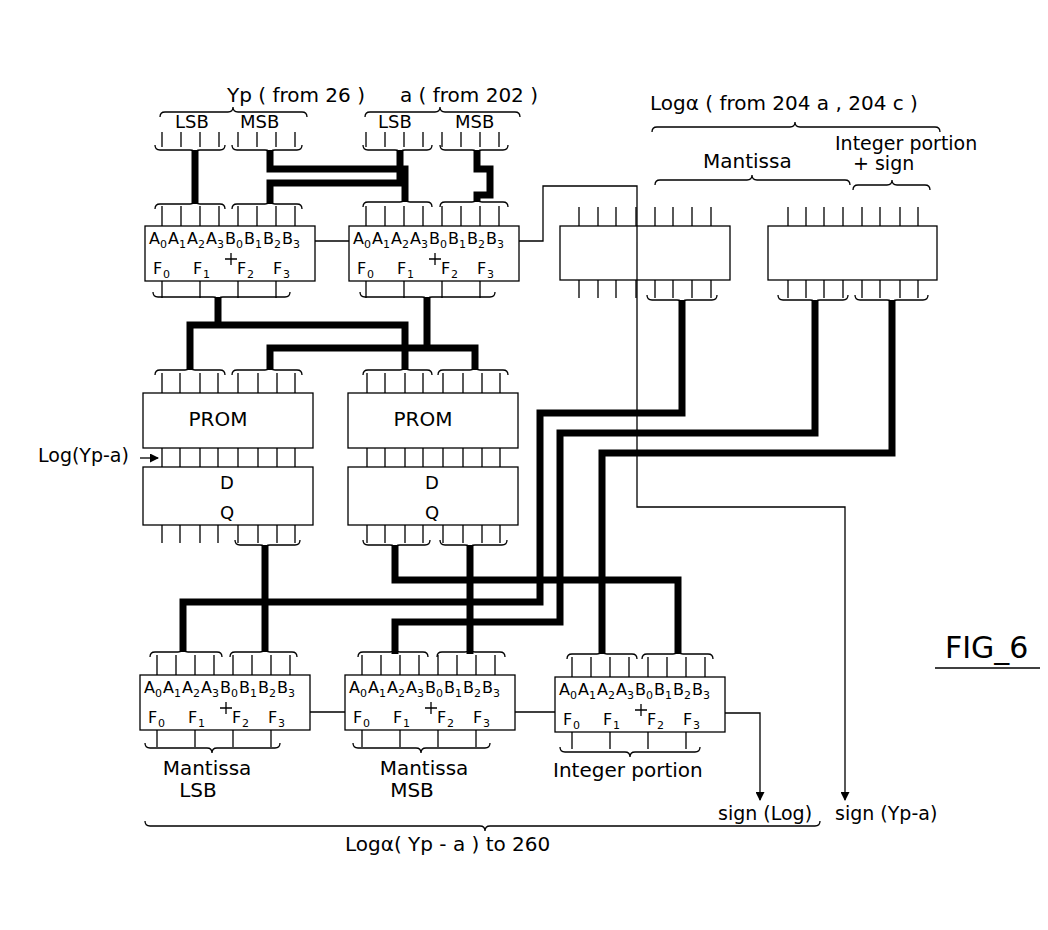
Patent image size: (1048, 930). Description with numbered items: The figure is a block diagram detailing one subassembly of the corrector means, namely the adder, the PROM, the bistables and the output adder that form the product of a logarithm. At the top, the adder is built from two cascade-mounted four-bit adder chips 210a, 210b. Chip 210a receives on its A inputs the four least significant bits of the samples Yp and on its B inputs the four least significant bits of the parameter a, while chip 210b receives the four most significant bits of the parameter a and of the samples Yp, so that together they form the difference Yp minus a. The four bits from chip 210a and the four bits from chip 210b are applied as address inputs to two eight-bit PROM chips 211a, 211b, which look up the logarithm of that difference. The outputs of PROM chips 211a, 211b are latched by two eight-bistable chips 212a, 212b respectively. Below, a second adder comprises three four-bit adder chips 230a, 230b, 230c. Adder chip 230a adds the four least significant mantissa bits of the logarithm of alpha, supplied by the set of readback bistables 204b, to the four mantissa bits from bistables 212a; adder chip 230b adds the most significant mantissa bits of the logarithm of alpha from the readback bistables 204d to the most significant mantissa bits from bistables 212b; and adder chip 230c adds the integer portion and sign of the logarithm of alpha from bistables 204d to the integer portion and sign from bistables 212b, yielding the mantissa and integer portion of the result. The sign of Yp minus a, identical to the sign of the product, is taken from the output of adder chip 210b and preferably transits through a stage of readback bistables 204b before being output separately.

The 4-bit adder chip 210a is at (135, 243).
The 4-bit adder chip 210b is at (343, 263).
The 8-bit PROM chip 211a is at (140, 415).
The 8-bit PROM chip 211b is at (527, 405).
The 8-bistable chip 212a is at (140, 516).
The 8-bistable chip 212b is at (337, 528).
The set of readback bistables 204b is at (733, 238).
The set of readback bistables 204d is at (945, 253).
The 4-bit adder chip 230a is at (135, 690).
The 4-bit adder chip 230b is at (335, 680).
The 4-bit adder chip 230c is at (545, 680).